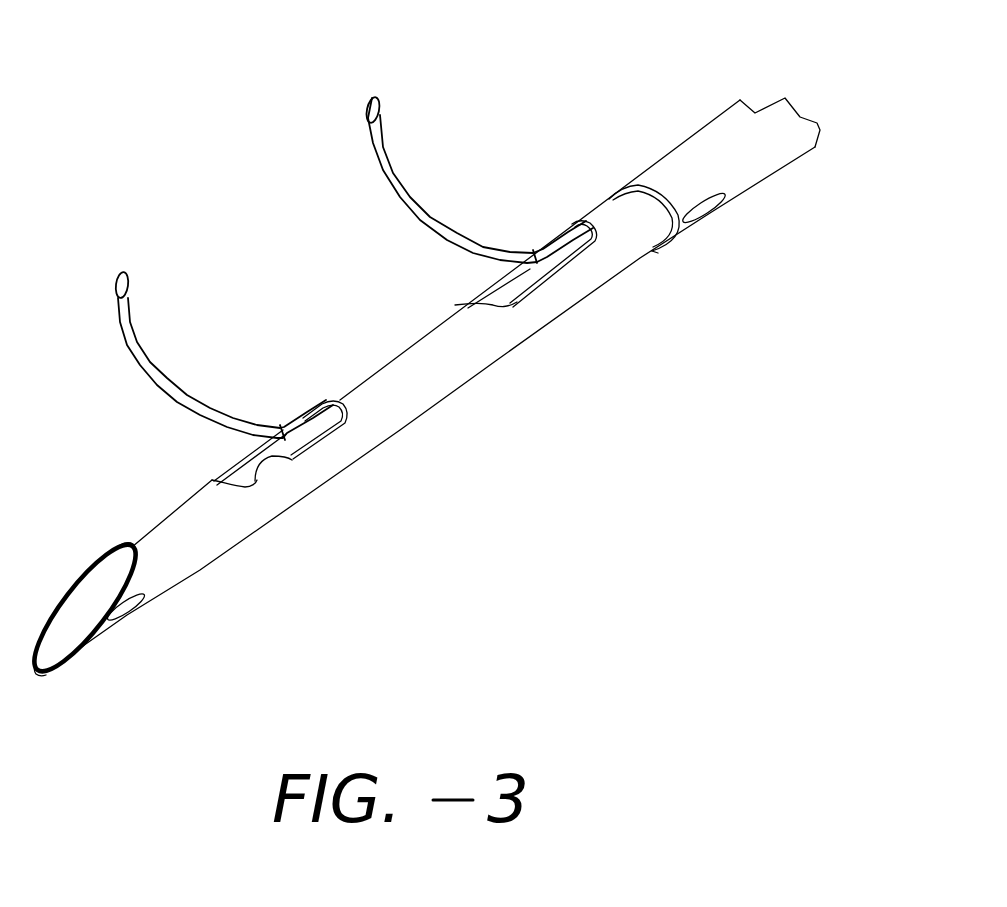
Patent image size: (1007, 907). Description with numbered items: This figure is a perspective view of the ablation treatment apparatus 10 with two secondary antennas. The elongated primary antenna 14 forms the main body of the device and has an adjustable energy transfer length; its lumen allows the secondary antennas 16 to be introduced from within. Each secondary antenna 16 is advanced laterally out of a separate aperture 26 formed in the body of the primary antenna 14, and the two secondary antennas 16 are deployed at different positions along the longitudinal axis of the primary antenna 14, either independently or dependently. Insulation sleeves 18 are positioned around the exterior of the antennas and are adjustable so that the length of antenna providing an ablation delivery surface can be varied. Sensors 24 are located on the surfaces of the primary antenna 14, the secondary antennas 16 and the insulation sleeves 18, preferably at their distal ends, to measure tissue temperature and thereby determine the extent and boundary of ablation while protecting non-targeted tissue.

The ablation treatment apparatus 10 is at (461, 357).
The primary antenna 14 is at (227, 535).
The secondary antenna 16 is at (440, 218).
The insulation sleeve 18 is at (303, 430).
The sensor 24 is at (370, 98).
The aperture 26 is at (292, 459).